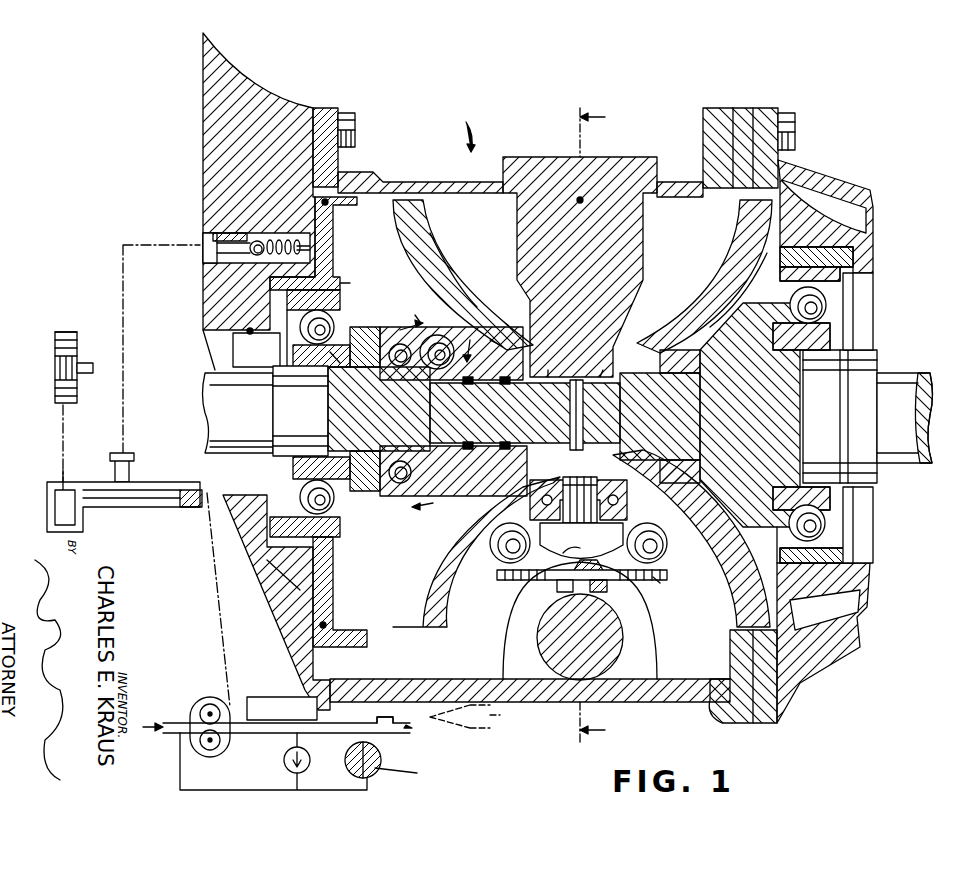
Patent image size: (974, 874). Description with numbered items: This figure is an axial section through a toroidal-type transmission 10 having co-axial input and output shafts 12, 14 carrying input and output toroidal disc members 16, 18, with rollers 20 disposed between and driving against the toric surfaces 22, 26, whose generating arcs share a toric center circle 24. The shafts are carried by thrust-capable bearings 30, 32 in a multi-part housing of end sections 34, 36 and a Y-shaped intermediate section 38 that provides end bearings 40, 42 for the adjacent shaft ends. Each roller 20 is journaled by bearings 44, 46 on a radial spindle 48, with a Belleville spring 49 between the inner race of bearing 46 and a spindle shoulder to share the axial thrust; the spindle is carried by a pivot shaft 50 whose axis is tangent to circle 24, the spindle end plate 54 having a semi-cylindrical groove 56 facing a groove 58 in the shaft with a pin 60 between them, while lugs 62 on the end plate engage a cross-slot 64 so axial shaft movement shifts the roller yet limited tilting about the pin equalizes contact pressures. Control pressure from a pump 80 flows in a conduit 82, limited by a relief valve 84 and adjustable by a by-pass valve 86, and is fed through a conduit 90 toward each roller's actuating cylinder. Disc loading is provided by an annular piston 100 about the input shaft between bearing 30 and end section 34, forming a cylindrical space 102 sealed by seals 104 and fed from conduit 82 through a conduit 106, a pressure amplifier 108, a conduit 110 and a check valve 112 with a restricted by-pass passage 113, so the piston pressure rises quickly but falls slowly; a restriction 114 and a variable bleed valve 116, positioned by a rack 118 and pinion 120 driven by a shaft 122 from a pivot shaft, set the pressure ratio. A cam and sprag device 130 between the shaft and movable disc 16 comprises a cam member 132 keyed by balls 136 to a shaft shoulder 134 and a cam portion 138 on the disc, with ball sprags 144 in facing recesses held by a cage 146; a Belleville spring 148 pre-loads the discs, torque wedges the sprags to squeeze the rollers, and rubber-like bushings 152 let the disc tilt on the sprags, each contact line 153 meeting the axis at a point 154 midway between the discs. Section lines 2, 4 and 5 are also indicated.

The section line 2- 2 is at (592, 426).
The section line 4- 4 is at (416, 416).
The section line 5- 5 is at (474, 355).
The transmission 10 is at (460, 134).
The input shaft 12 is at (250, 417).
The output shaft 14 is at (910, 418).
The input toroidal disc member 16 is at (430, 215).
The output toroidal disc member 18 is at (745, 215).
The rollers 20 is at (700, 553).
The toroidal surface 22 is at (437, 240).
The toric center circle 24 is at (582, 202).
The toroidal surface 26 is at (740, 242).
The bearing 30 is at (335, 372).
The bearing 32 is at (828, 307).
The housing end section 34 is at (281, 96).
The housing end section 36 is at (740, 108).
The intermediate housing section 38 is at (591, 290).
The end bearing 40 is at (550, 377).
The end bearing 42 is at (600, 377).
The bearing 44 is at (497, 563).
The bearing 46 is at (616, 512).
The spindle 48 is at (606, 543).
The spring 49 is at (548, 506).
The pivot shaft 50 is at (596, 652).
The end plate 54 is at (655, 578).
The semi-cylindrical groove 56 is at (577, 567).
The groove 58 is at (607, 585).
The pin 60 is at (594, 552).
The lugs 62 is at (556, 586).
The cross-slot 64 is at (560, 595).
The pump 80 is at (207, 697).
The conduit 82 is at (237, 733).
The pressure relief valve 84 is at (284, 763).
The by-pass valve 86 is at (373, 773).
The conduit 90 is at (475, 716).
The annular piston 100 is at (334, 247).
The annular cylindrical space 102 is at (310, 593).
The seals 104 is at (326, 203).
The conduit 106 is at (386, 718).
The pressure amplifier 108 is at (283, 697).
The conduit 110 is at (126, 298).
The check valve 112 is at (256, 256).
The by-pass passage 113 is at (245, 232).
The restriction 114 is at (146, 482).
The variable bleed valve 116 is at (76, 481).
The rack 118 is at (72, 331).
The pinion 120 is at (77, 347).
The shaft 122 is at (80, 375).
The cam and sprag device 130 is at (417, 312).
The cam member 132 is at (398, 407).
The shoulder 134 is at (386, 328).
The balls 136 is at (395, 364).
The cam portion 138 is at (457, 340).
The sprag 144 is at (338, 365).
The cage 146 is at (461, 325).
The spring 148 is at (350, 307).
The rubber-like bushings 152 is at (488, 388).
The line 153 is at (525, 346).
The point 154 is at (584, 406).